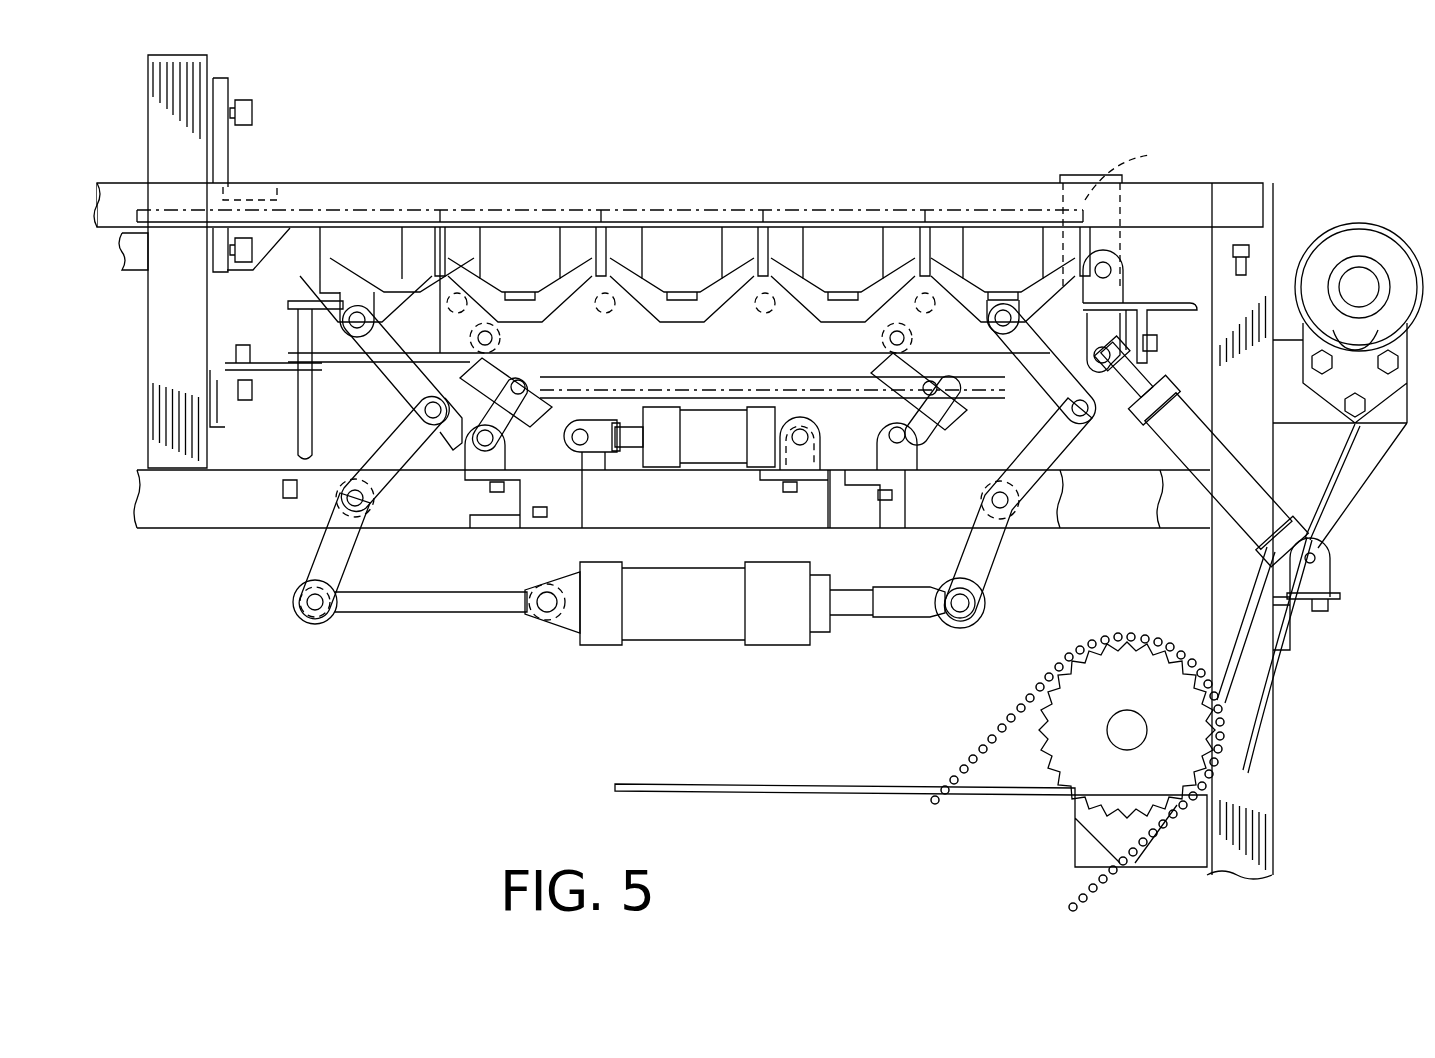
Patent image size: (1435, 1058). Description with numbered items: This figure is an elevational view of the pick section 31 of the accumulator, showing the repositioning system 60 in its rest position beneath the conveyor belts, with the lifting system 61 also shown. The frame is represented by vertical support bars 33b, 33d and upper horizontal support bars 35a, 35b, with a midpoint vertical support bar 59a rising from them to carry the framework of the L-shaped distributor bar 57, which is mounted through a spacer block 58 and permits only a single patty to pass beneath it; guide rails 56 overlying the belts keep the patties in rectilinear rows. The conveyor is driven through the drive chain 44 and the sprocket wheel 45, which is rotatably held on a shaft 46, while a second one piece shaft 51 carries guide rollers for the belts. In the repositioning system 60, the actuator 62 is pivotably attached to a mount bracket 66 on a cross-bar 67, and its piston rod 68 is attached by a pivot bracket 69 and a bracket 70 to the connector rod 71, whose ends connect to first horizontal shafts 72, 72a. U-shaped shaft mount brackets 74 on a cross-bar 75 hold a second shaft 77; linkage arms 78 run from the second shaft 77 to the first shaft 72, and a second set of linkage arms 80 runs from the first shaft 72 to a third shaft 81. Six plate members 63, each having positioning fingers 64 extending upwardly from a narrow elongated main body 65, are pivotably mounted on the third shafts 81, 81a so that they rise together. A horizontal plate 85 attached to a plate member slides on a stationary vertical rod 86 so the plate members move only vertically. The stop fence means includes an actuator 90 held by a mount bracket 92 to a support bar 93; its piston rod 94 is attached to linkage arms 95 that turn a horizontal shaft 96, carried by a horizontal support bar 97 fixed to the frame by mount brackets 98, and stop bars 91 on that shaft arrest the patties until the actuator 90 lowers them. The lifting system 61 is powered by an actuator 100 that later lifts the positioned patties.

The pick section 31 is at (796, 150).
The vertical support bar 33b is at (1280, 805).
The vertical support bar 33d is at (1215, 600).
The upper horizontal support bar 35a is at (212, 516).
The upper horizontal support bar 35b is at (1196, 510).
The drive chain 44 is at (985, 750).
The sprocket wheel 45 is at (1141, 791).
The shaft 46 is at (1122, 716).
The second one piece shaft 51 is at (1358, 285).
The guide rails 56 is at (1247, 198).
The L-shaped distributor bar 57 is at (262, 188).
The spacer block 58 is at (220, 97).
The midpoint vertical support bar 59a is at (205, 348).
The repositioning system 60 is at (720, 470).
The lifting system 61 is at (668, 650).
The actuator 62 is at (732, 451).
The plate member 63 is at (625, 348).
The positioning fingers 64 is at (440, 222).
The main body 65 is at (772, 335).
The mount bracket 66 is at (825, 448).
The cross-bar 67 is at (835, 497).
The piston rod 68 is at (636, 446).
The pivot bracket 69 is at (597, 452).
The bracket 70 is at (600, 390).
The connector rod 71 is at (706, 392).
The first horizontal shaft 72 is at (537, 378).
The first horizontal shaft 72a is at (945, 388).
The U-shaped shaft mount bracket 74 is at (465, 462).
The cross-bar 75 is at (455, 522).
The second shaft 77 is at (507, 442).
The linkage arms 78 is at (488, 390).
The second set of linkage arms 80 is at (500, 350).
The third shaft 81 is at (470, 338).
The third shaft 81a is at (885, 338).
The horizontal plate 85 is at (340, 365).
The vertical rod 86 is at (300, 440).
The actuator 90 is at (1262, 478).
The stop bars 91 is at (1150, 155).
The mount bracket 92 is at (1317, 557).
The support bar 93 is at (1290, 632).
The piston rod 94 is at (1150, 393).
The linkage arms 95 is at (1090, 330).
The horizontal shaft 96 is at (1105, 270).
The horizontal support bar 97 is at (1148, 305).
The mount brackets 98 is at (1132, 310).
The actuator 100 is at (691, 619).